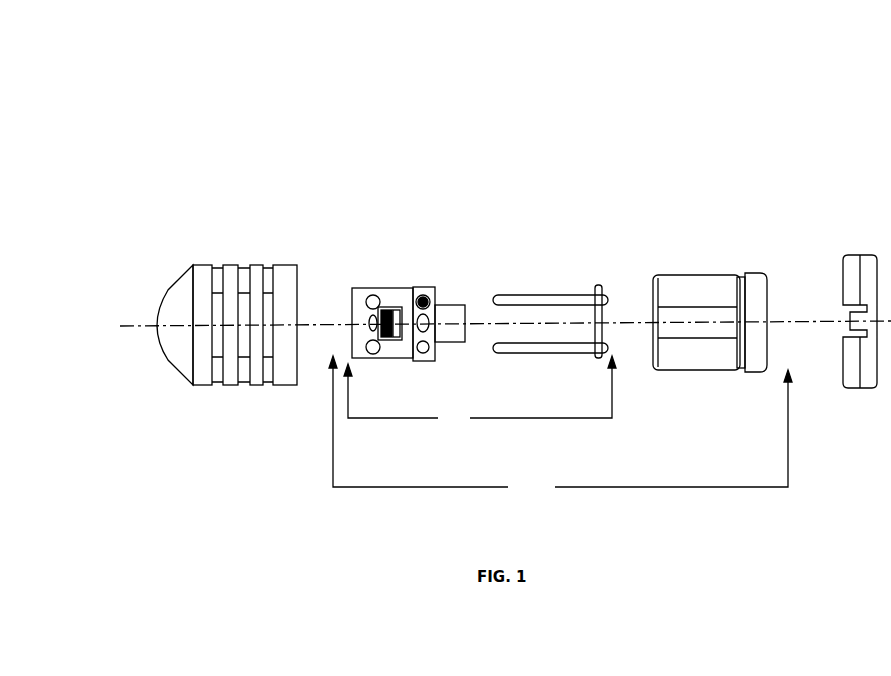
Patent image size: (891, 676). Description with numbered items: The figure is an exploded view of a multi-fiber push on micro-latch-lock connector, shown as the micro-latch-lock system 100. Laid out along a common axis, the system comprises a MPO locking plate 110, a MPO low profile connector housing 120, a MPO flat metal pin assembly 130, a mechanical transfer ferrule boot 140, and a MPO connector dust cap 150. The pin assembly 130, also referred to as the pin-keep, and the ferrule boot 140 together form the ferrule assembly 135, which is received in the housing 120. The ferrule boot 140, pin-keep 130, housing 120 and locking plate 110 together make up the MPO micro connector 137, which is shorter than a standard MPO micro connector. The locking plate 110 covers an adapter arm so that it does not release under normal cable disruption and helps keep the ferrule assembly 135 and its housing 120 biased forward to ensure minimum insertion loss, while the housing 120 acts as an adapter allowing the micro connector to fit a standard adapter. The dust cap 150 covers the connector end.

The micro-latch-lock system 100 is at (779, 96).
The MPO locking plate 110 is at (852, 247).
The MPO low profile connector housing 120 is at (692, 268).
The MPO flat metal pin assembly 130 is at (549, 286).
The ferrule assembly 135 is at (480, 392).
The MPO micro connector 137 is at (560, 425).
The MT ferrule boot 140 is at (386, 282).
The MPO connector dust cap 150 is at (262, 258).